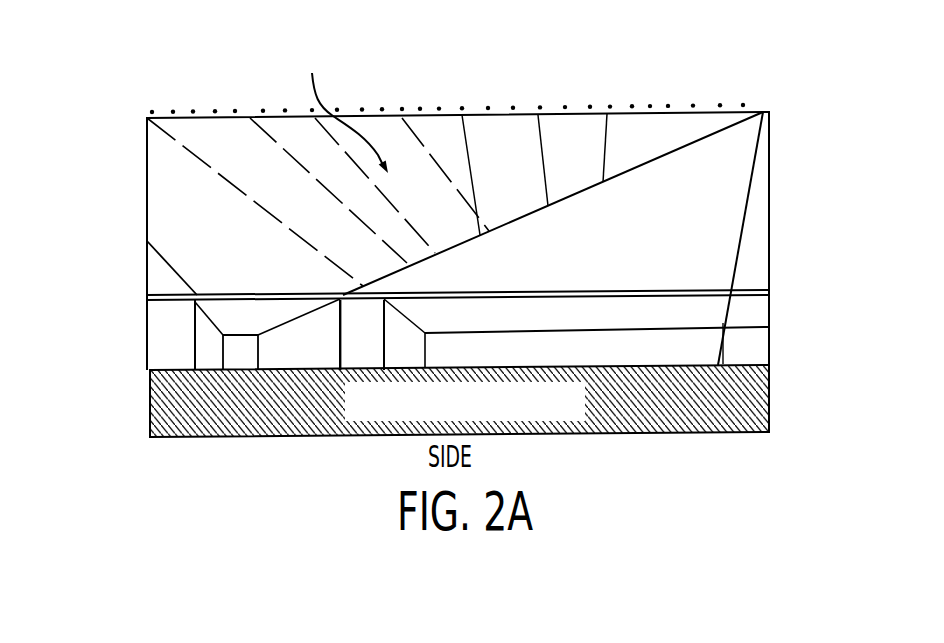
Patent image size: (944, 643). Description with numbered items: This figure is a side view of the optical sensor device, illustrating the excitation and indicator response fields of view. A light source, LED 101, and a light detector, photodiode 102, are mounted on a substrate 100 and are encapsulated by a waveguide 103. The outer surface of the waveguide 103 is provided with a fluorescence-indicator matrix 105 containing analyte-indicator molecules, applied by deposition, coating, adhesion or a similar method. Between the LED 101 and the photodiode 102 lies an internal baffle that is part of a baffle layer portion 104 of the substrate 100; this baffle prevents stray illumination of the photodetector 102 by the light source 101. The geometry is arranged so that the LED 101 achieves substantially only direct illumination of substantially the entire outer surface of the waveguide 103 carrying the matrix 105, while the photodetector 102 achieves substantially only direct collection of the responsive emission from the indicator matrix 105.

The substrate 100 is at (163, 405).
The LED 101 is at (223, 348).
The photodiode 102 is at (700, 345).
The waveguide 103 is at (158, 202).
The baffle layer portion 104 is at (352, 340).
The fluorescence-indicator matrix 105 is at (147, 106).